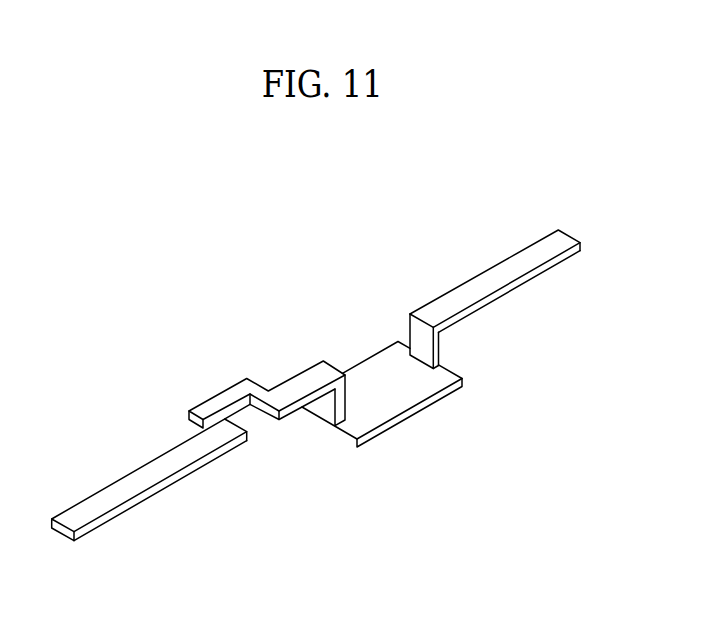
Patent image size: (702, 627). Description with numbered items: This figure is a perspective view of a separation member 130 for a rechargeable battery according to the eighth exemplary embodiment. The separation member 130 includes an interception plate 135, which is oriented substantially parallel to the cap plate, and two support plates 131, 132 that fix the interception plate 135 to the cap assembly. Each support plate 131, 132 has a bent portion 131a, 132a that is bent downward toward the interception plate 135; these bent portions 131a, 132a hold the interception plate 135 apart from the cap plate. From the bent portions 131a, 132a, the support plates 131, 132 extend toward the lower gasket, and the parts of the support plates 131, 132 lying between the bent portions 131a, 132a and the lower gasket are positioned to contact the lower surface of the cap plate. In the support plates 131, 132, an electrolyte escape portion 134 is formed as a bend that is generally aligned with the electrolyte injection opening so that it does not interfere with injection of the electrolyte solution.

The separation member 130 is at (328, 285).
The support plate 131 is at (495, 273).
The bent portion 131a is at (423, 343).
The support plate 132 is at (137, 483).
The bent portion 132a is at (337, 402).
The electrolyte escape portion 134 is at (223, 401).
The interception plate 135 is at (389, 399).